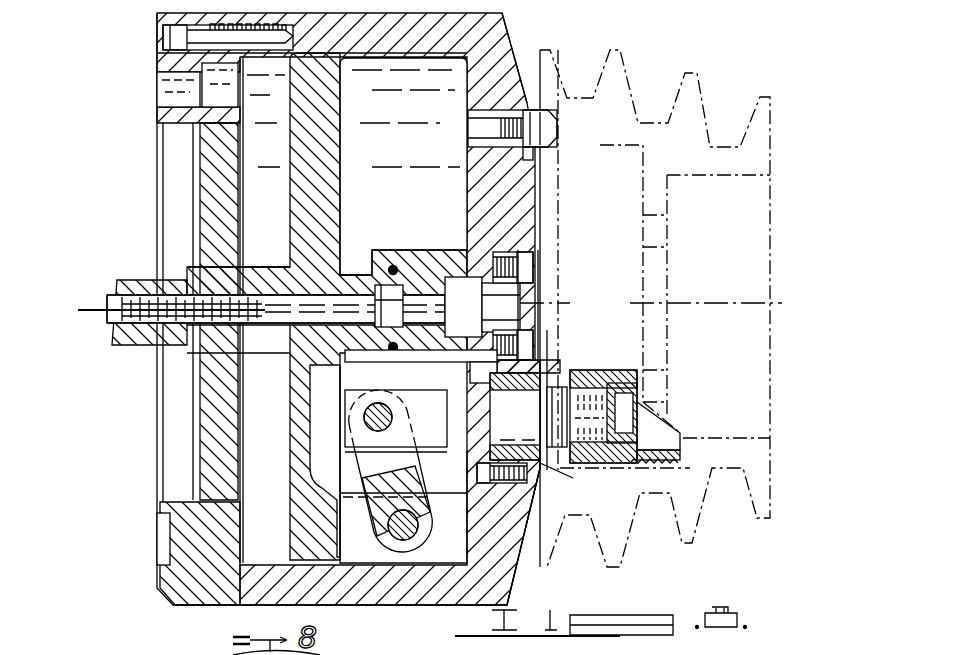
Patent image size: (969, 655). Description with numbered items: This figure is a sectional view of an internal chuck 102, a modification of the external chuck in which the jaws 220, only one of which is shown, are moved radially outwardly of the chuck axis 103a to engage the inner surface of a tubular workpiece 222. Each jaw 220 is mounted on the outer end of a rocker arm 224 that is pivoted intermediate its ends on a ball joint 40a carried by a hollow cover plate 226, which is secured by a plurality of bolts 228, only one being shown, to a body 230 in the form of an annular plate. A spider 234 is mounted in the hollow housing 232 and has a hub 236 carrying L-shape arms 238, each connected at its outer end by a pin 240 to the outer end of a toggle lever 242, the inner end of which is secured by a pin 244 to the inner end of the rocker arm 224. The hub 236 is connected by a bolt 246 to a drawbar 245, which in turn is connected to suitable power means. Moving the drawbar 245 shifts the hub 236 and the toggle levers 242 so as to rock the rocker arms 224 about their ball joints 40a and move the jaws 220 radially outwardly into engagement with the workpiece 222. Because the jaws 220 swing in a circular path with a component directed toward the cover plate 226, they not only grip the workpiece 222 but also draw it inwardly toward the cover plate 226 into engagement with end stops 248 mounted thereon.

The drive head assembly 102 is at (536, 24).
The drive shaft 103a is at (90, 302).
The mounting flange 40a is at (550, 348).
The jaw 220 is at (648, 468).
The tubular workpiece 222 is at (622, 92).
The rocker arm 224 is at (530, 420).
The hollow cover plate 226 is at (500, 578).
The bolt 228 is at (177, 34).
The body 230 is at (187, 600).
The hollow housing 232 is at (452, 616).
The spider 234 is at (277, 363).
The hub 236 is at (362, 262).
The L-shape arm 238 is at (303, 530).
The pin 240 is at (407, 535).
The toggle lever 242 is at (427, 480).
The pin 244 is at (390, 417).
The drawbar 245 is at (127, 337).
The bolt 246 is at (355, 295).
The end stop 248 is at (543, 148).